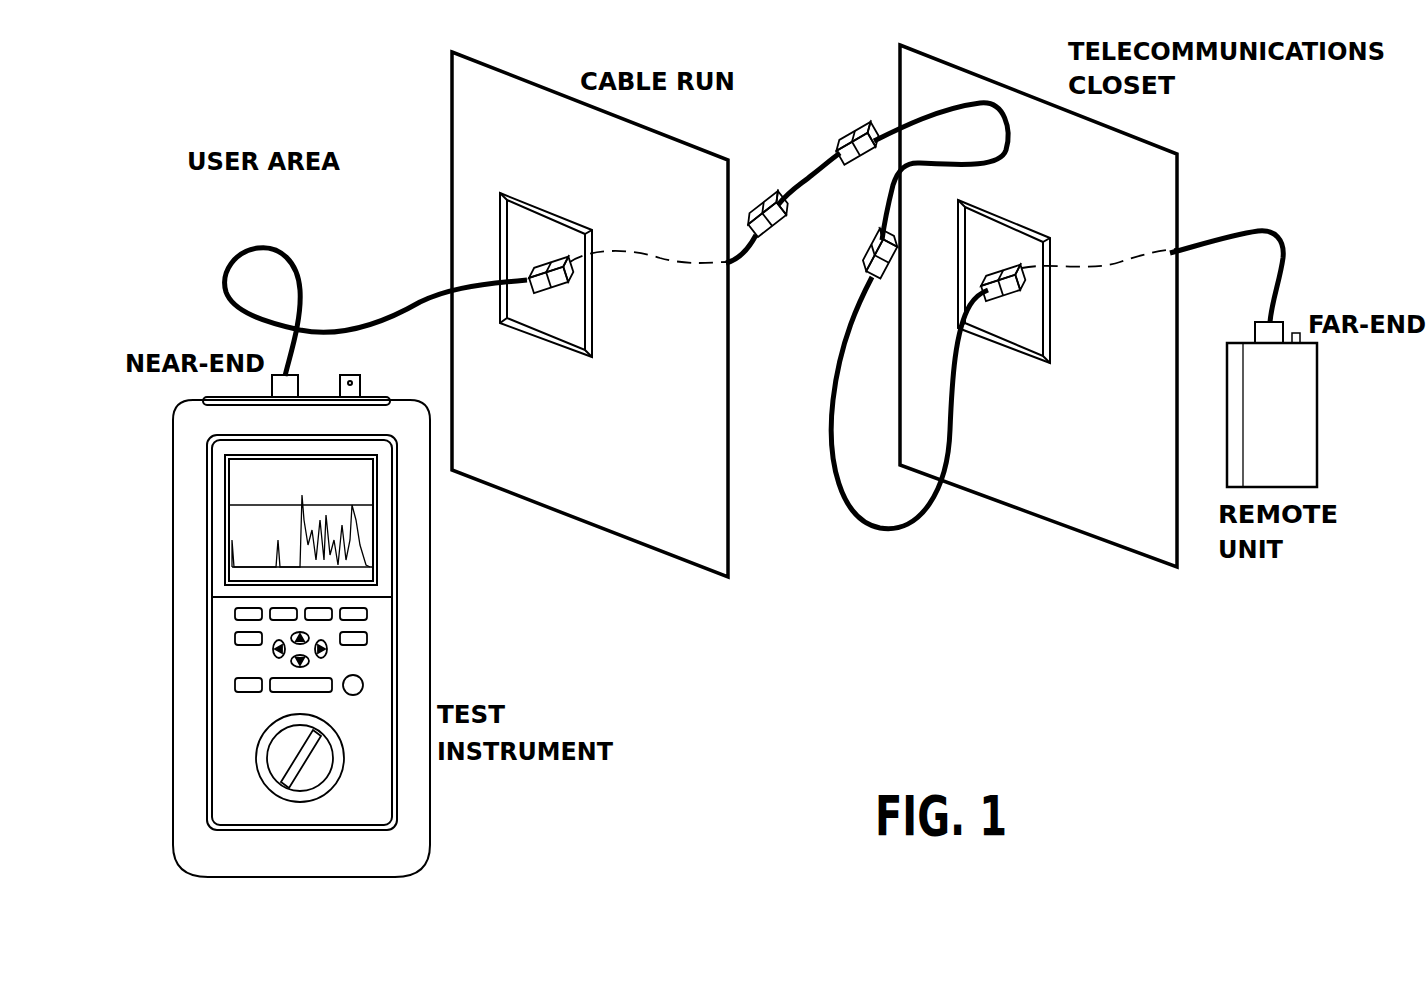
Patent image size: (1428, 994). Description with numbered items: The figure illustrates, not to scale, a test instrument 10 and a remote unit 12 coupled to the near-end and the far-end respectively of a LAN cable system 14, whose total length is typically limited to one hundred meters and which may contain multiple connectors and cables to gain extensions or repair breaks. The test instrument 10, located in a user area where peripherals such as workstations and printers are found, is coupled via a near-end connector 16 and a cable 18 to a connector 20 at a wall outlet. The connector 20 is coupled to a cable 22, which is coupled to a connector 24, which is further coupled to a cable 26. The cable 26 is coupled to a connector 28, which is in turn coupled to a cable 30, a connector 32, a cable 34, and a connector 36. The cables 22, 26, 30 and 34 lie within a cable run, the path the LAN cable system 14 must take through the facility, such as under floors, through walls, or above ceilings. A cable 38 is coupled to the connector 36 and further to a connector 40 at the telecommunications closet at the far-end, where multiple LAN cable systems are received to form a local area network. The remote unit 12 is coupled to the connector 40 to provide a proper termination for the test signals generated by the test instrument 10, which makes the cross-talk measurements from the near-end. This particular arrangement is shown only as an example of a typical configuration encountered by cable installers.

The test instrument 10 is at (430, 658).
The remote unit 12 is at (1317, 427).
The LAN cable system 14 is at (747, 33).
The near-end connector 16 is at (295, 373).
The cable 18 is at (435, 293).
The connector 20 is at (550, 287).
The cable 22 is at (747, 257).
The connector 24 is at (753, 197).
The cable 26 is at (802, 180).
The connector 28 is at (867, 130).
The cable 30 is at (947, 100).
The connector 32 is at (900, 253).
The cable 34 is at (842, 410).
The connector 36 is at (1025, 293).
The cable 38 is at (1213, 233).
The connector 40 is at (1273, 312).